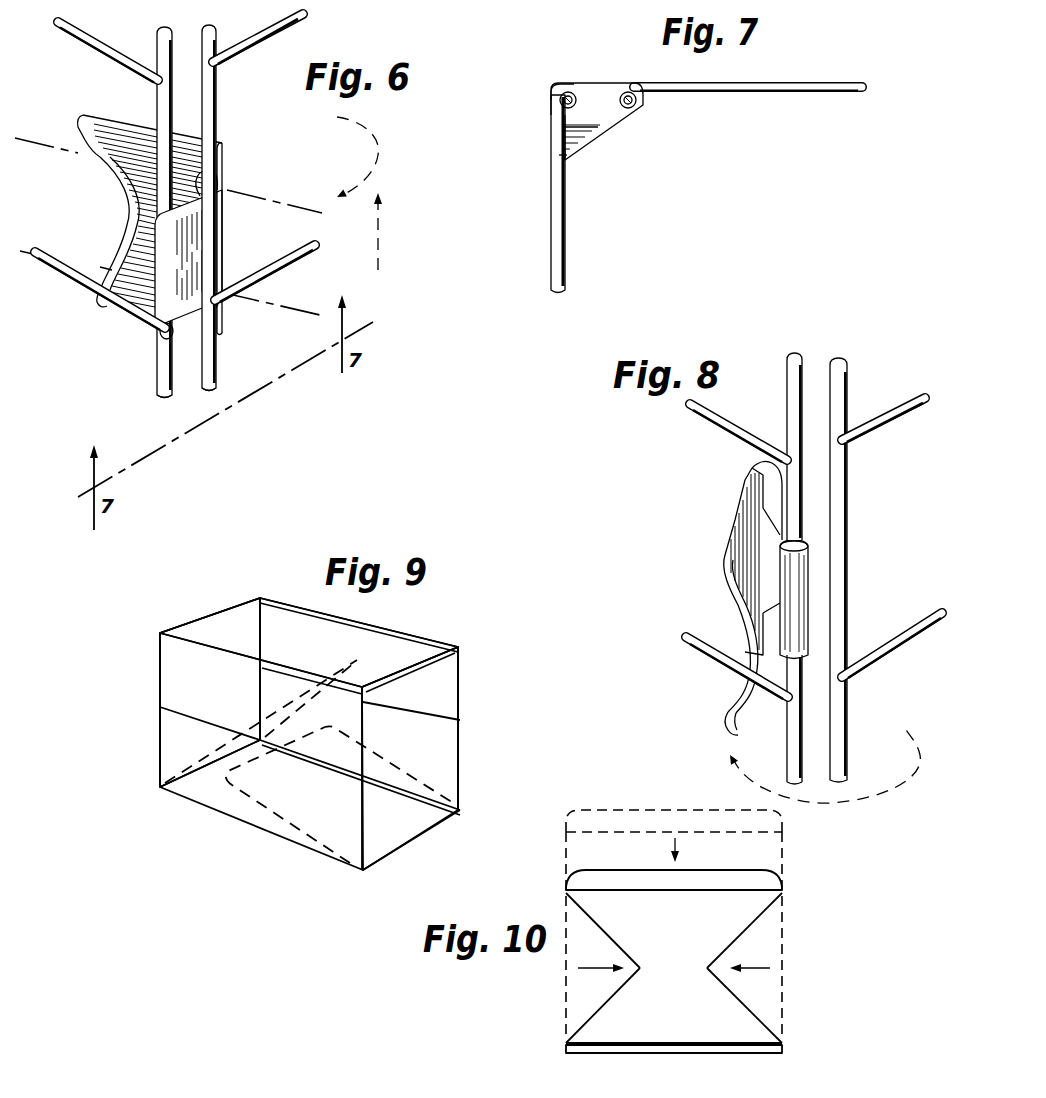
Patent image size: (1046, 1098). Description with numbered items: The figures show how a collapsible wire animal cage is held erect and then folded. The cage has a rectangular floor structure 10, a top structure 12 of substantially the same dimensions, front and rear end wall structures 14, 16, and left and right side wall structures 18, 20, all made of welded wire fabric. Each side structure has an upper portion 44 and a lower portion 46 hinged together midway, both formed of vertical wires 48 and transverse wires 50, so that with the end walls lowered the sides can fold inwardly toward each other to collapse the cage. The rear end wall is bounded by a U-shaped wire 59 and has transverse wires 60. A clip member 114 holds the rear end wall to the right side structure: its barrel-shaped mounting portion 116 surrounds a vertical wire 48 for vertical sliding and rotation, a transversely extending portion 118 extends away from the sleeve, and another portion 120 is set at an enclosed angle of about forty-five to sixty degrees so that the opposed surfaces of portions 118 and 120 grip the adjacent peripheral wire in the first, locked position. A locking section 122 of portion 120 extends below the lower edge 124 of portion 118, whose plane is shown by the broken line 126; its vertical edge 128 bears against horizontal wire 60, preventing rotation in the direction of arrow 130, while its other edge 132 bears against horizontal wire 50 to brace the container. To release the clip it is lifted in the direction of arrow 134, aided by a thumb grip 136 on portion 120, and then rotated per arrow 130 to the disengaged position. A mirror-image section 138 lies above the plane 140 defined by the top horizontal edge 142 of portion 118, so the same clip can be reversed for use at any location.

In FIG. 9, the floor structure 10 is at (228, 826).
In FIG. 10, the floor structure 10 is at (720, 1068).
In FIG. 9, the top structure 12 is at (224, 585).
In FIG. 10, the top structure 12 is at (634, 793).
In FIG. 9, the front end wall structure 14 is at (138, 650).
In FIG. 9, the rear end wall structure 16 is at (478, 710).
In FIG. 9, the left hand side wall structure 18 is at (474, 642).
In FIG. 10, the left hand side wall structure 18 is at (532, 980).
In FIG. 9, the right hand side wall structure 20 is at (140, 767).
In FIG. 10, the right hand side wall structure 20 is at (804, 933).
In FIG. 10, the upper portion 44 is at (610, 943).
In FIG. 10, the lower portion 46 is at (612, 1003).
In FIG. 6, the vertical wires 48 is at (158, 33).
In FIG. 8, the vertical wires 48 is at (787, 388).
In FIG. 6, the transverse wires 50 is at (85, 56).
In FIG. 7, the transverse wires 50 is at (565, 222).
In FIG. 8, the transverse wires 50 is at (712, 432).
In FIG. 6, the U-shaped wire 59 is at (212, 30).
In FIG. 8, the U-shaped wire 59 is at (848, 486).
In FIG. 6, the transverse wires 60 is at (306, 24).
In FIG. 7, the transverse wires 60 is at (802, 96).
In FIG. 8, the transverse wires 60 is at (916, 397).
In FIG. 6, the clip member 114 is at (176, 203).
In FIG. 7, the clip member 114 is at (609, 109).
In FIG. 8, the clip member 114 is at (747, 592).
In FIG. 6, the barrel-shaped mounting portion 116 is at (150, 300).
In FIG. 7, the barrel-shaped mounting portion 116 is at (560, 88).
In FIG. 8, the barrel-shaped mounting portion 116 is at (806, 592).
In FIG. 6, the transversely extending portion 118 is at (205, 241).
In FIG. 7, the transversely extending portion 118 is at (598, 83).
In FIG. 6, the angled portion 120 is at (155, 135).
In FIG. 7, the angled portion 120 is at (615, 130).
In FIG. 8, the angled portion 120 is at (735, 512).
In FIG. 6, the locking section 122 is at (206, 346).
In FIG. 6, the lower edge 124 is at (181, 350).
In FIG. 6, the broken line 126 is at (290, 303).
In FIG. 6, the vertical edge 128 is at (224, 322).
In FIG. 7, the vertical edge 128 is at (640, 100).
In FIG. 6, the arrow 130 is at (379, 150).
In FIG. 8, the arrow 130 is at (920, 750).
In FIG. 6, the other edge 132 is at (98, 304).
In FIG. 7, the other edge 132 is at (560, 155).
In FIG. 8, the other edge 132 is at (722, 724).
In FIG. 6, the arrow 134 is at (383, 240).
In FIG. 6, the thumb grip 136 is at (125, 214).
In FIG. 7, the thumb grip 136 is at (555, 135).
In FIG. 8, the thumb grip 136 is at (735, 630).
In FIG. 6, the locking section 138 is at (80, 127).
In FIG. 8, the locking section 138 is at (718, 576).
In FIG. 6, the plane 140 is at (80, 160).
In FIG. 6, the top horizontal edge 142 is at (200, 182).
In FIG. 8, the top horizontal edge 142 is at (762, 467).